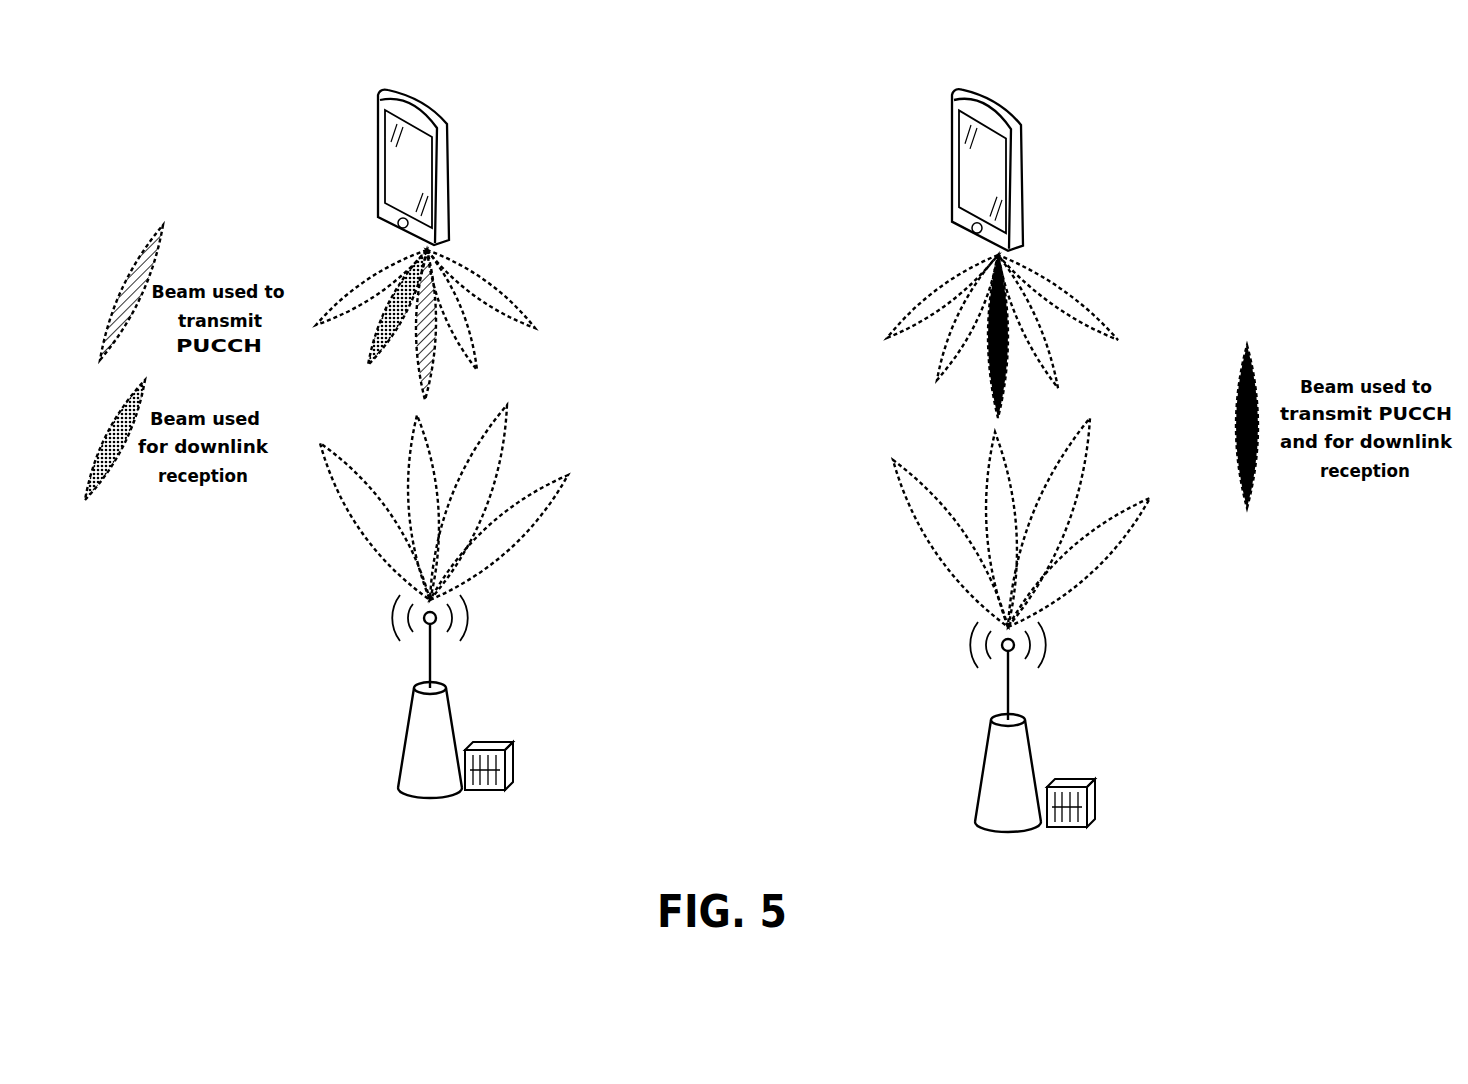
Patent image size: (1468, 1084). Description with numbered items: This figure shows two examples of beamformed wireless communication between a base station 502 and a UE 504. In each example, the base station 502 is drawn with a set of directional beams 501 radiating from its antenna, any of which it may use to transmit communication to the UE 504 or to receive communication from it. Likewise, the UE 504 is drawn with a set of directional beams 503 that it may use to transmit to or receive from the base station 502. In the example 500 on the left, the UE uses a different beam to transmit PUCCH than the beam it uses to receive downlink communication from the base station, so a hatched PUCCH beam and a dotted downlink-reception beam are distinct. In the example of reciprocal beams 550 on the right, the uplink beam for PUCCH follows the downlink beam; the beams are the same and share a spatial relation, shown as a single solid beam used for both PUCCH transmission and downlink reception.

The example 500 is at (175, 101).
The example of reciprocal beams 550 is at (905, 103).
The directional beam 501 is at (350, 515).
The base station 502 is at (440, 803).
The directional beam 503 is at (515, 303).
The UE 504 is at (452, 148).